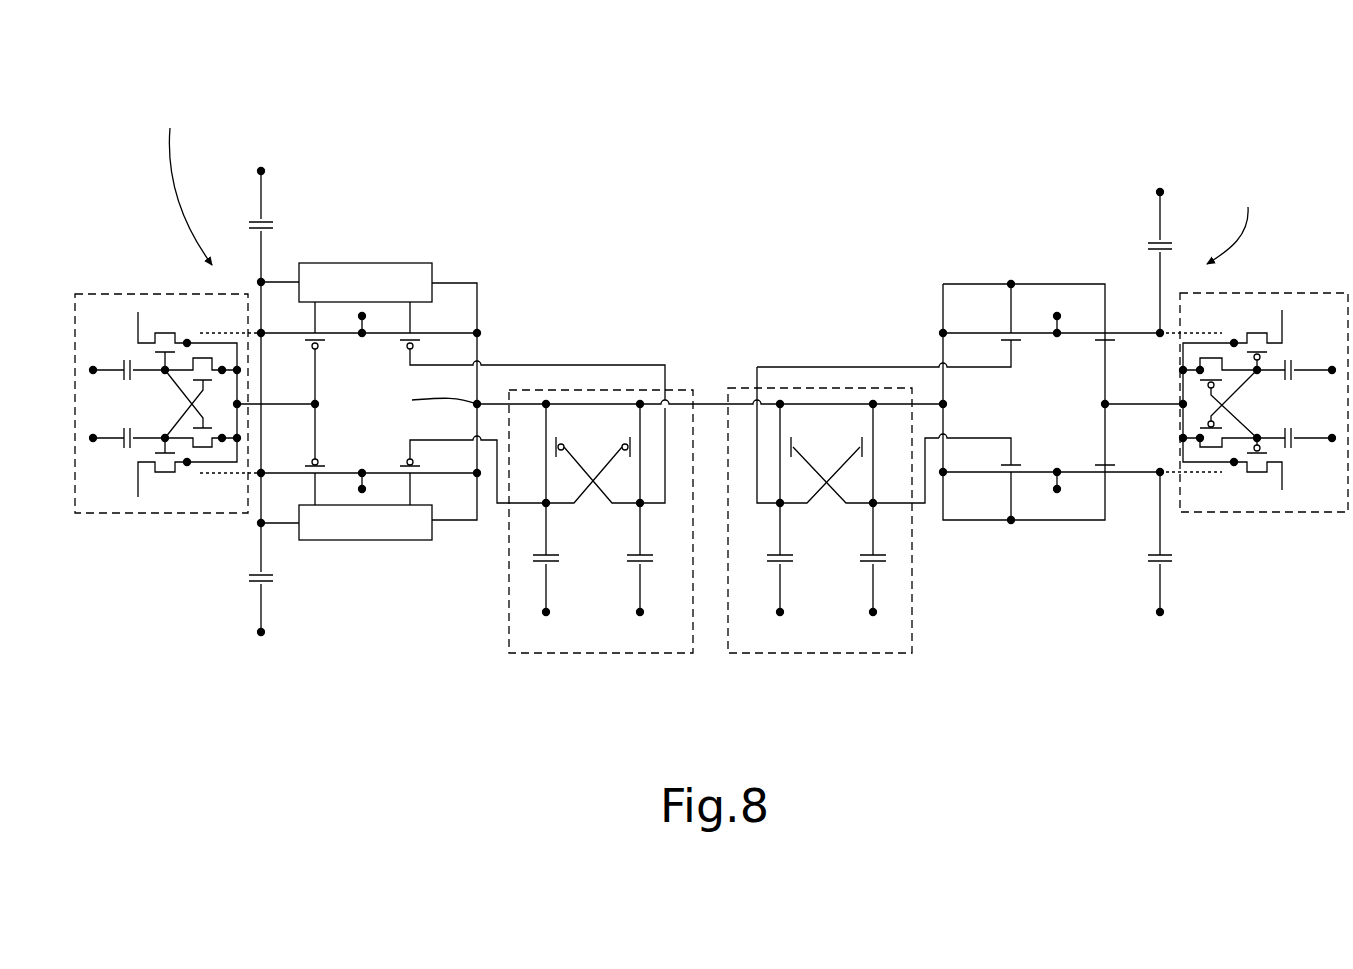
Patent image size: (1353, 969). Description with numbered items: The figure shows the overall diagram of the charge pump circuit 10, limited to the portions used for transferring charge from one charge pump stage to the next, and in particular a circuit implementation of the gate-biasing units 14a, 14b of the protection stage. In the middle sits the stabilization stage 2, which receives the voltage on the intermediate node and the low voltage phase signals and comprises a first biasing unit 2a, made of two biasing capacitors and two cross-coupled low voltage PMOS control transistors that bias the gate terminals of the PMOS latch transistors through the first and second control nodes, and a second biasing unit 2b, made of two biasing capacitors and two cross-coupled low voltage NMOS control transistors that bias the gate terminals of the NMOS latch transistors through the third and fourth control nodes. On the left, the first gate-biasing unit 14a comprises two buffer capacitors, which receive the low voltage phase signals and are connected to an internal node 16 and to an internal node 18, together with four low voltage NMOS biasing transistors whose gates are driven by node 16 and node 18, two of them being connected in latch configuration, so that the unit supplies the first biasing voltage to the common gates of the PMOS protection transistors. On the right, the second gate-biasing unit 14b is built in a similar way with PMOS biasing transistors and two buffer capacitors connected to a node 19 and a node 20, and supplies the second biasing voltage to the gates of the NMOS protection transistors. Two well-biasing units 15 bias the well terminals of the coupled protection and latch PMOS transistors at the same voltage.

The charge pump circuit 10 is at (509, 382).
The well-biasing unit 15 is at (385, 263).
The first gate-biasing unit 14a is at (161, 455).
The second gate-biasing unit 14b is at (1285, 195).
The node 16 is at (163, 371).
The node 18 is at (163, 437).
The node 19 is at (1259, 372).
The node 20 is at (1259, 436).
The stabilization stage 2 is at (722, 568).
The first biasing unit 2a is at (587, 653).
The second biasing unit 2b is at (820, 653).